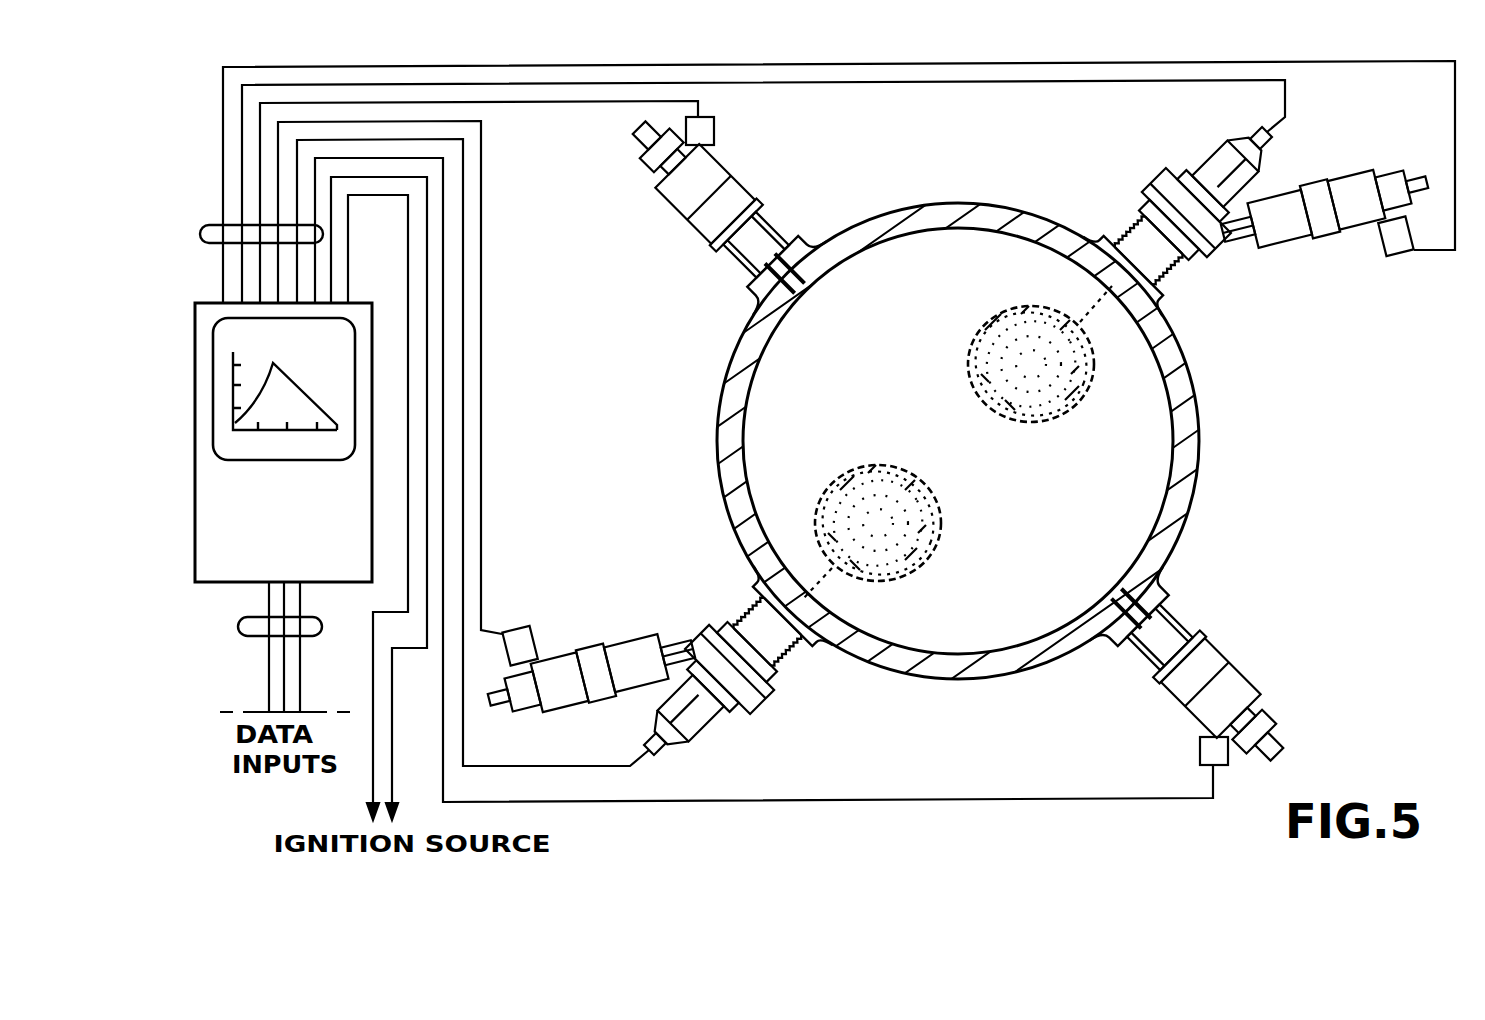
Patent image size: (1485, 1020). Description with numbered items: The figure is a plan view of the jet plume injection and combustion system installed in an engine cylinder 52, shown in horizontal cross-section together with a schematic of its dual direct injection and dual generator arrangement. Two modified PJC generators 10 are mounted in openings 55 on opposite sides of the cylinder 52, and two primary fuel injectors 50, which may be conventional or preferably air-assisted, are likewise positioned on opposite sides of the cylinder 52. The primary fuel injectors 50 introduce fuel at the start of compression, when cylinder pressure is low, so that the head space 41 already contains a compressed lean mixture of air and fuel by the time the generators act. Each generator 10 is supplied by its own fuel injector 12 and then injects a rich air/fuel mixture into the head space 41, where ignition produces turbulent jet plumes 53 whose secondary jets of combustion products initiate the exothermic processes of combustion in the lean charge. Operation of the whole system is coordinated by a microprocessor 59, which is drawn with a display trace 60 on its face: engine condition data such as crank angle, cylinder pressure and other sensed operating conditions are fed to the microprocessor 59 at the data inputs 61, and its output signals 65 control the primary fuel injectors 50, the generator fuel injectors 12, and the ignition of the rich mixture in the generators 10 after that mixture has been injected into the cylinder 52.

The PJC generator 10 is at (1210, 265).
The fuel injector 12 is at (1315, 255).
The head space 41 is at (1056, 541).
The fuel injector 50 is at (755, 185).
The cylinder 52 is at (725, 370).
The jet plume 53 is at (1003, 318).
The opening 55 is at (1108, 262).
The microprocessor 59 is at (272, 565).
The pressure curve display 60 is at (307, 392).
The data inputs 61 is at (238, 628).
The output signals 65 is at (200, 236).